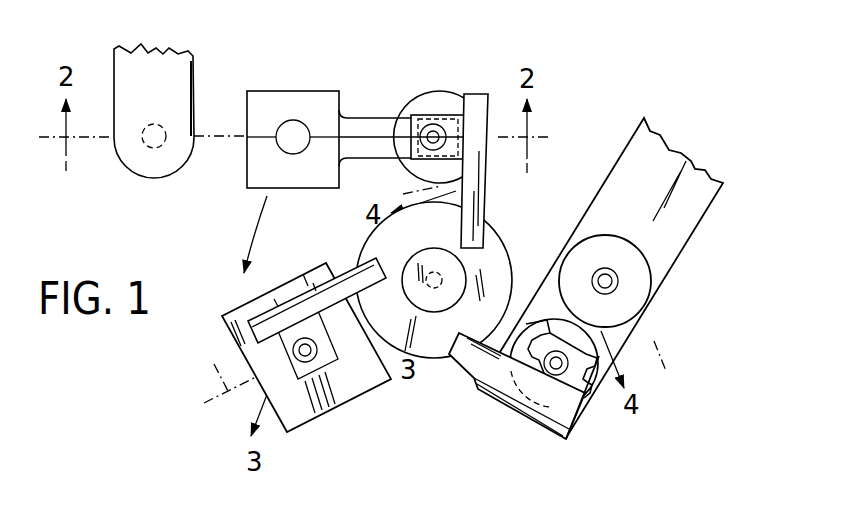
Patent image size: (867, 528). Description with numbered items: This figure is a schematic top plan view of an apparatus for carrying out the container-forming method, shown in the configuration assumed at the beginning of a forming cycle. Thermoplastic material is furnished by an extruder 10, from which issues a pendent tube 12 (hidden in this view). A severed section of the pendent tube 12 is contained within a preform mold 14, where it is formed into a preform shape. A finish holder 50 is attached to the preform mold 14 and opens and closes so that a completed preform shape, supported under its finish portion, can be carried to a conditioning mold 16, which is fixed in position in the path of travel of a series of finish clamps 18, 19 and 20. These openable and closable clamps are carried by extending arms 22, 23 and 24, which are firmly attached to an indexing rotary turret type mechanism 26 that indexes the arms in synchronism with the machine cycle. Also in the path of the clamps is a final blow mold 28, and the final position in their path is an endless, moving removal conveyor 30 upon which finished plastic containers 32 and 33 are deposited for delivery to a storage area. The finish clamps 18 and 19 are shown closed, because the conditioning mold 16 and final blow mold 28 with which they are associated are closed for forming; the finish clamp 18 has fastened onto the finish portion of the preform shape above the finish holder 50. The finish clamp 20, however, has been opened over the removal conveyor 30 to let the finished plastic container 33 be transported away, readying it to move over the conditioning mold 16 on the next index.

The extruder 10 is at (186, 80).
The pendent tube 12 is at (155, 138).
The preform mold 14 is at (299, 81).
The conditioning mold 16 is at (404, 86).
The finish clamp 18 is at (426, 105).
The finish clamp 19 is at (295, 371).
The finish clamp 20 is at (571, 393).
The extending arm 22 is at (479, 185).
The extending arm 23 is at (343, 261).
The extending arm 24 is at (462, 357).
The indexing rotary turret type mechanism 26 is at (426, 272).
The final blow mold 28 is at (346, 397).
The removal conveyor 30 is at (699, 206).
The finished plastic container 32 is at (644, 283).
The finished plastic container 33 is at (553, 323).
The finish holder 50 is at (357, 109).